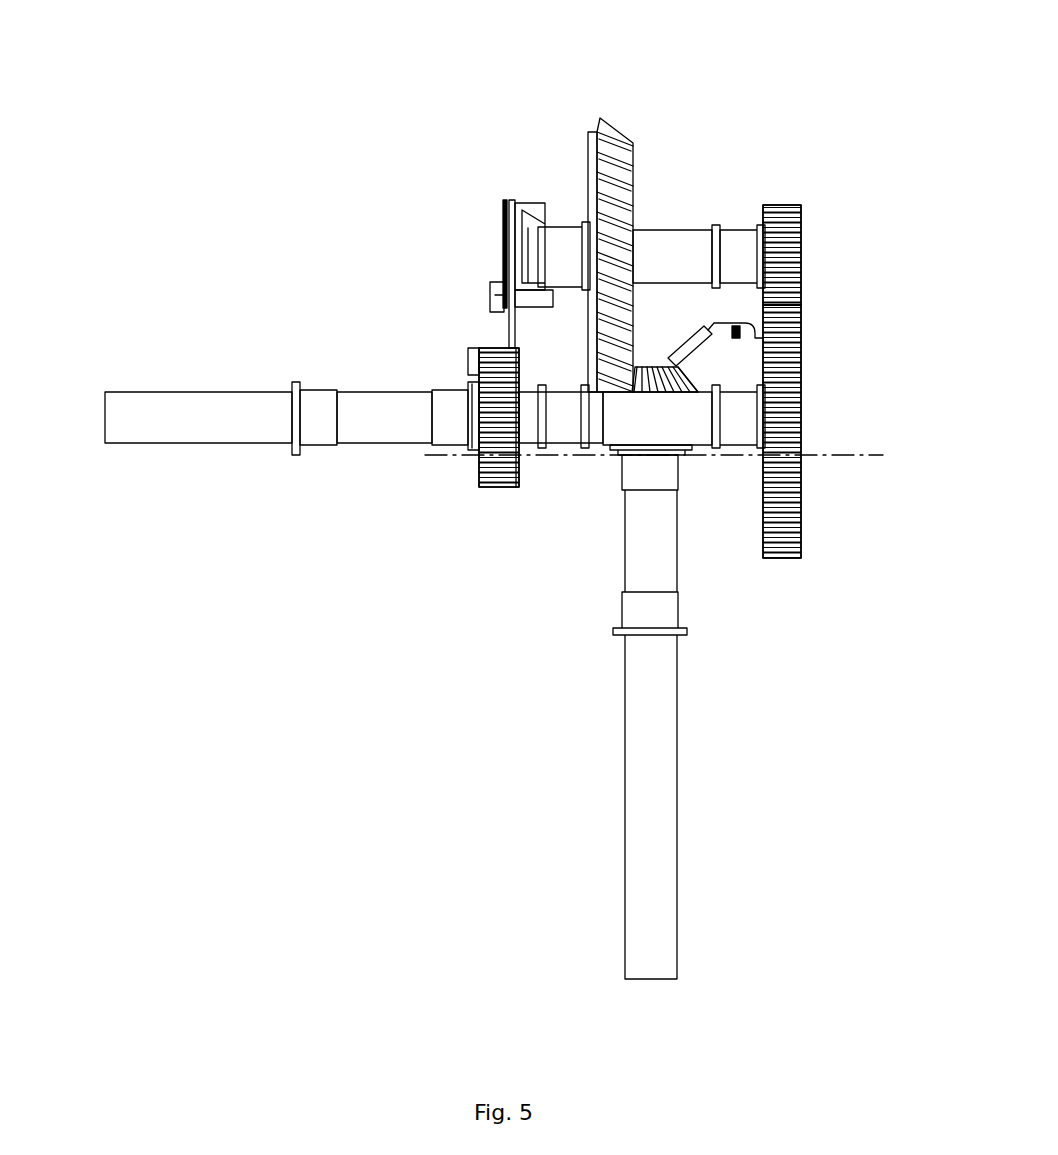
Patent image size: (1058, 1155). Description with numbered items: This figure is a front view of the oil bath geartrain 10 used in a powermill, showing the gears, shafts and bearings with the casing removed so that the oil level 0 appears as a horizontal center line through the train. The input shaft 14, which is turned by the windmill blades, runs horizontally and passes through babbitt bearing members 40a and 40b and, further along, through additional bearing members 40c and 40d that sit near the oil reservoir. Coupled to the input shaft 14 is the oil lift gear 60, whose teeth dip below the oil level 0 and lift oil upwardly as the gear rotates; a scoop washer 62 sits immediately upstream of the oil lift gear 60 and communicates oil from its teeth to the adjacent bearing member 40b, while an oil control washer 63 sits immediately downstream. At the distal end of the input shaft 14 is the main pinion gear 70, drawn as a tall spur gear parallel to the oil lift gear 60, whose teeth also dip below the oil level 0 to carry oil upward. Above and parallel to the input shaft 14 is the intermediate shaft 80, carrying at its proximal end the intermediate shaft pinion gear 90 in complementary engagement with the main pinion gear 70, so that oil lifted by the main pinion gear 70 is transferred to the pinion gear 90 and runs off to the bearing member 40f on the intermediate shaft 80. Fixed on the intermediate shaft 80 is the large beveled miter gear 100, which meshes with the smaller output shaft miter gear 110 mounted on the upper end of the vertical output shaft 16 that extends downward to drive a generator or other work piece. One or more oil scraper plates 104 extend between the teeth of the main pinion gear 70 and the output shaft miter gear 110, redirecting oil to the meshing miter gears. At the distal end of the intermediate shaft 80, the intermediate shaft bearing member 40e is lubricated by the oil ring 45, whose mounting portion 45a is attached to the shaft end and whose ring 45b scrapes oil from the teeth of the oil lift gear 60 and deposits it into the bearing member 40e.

The oil bath geartrain 10 is at (831, 82).
The oil level 0 is at (877, 448).
The input shaft 14 is at (620, 427).
The output shaft 16 is at (650, 553).
The babbitt bearing member 40a is at (327, 440).
The bearing member 40b is at (457, 412).
The bearing member 40c is at (567, 440).
The bearing member 40d is at (735, 440).
The intermediate shaft bearing member 40e is at (565, 237).
The bearing member 40f is at (738, 238).
The oil ring 45 is at (465, 266).
The mounting portion 45a is at (505, 212).
The ring 45b is at (507, 325).
The oil lift gear 60 is at (494, 505).
The scoop washer 62 is at (473, 432).
The oil control washer 63 is at (520, 468).
The main pinion gear 70 is at (800, 365).
The intermediate shaft 80 is at (675, 245).
The intermediate shaft pinion gear 90 is at (793, 232).
The miter gear 100 is at (654, 137).
The oil scraper plates 104 is at (723, 353).
The output shaft miter gear 110 is at (655, 357).